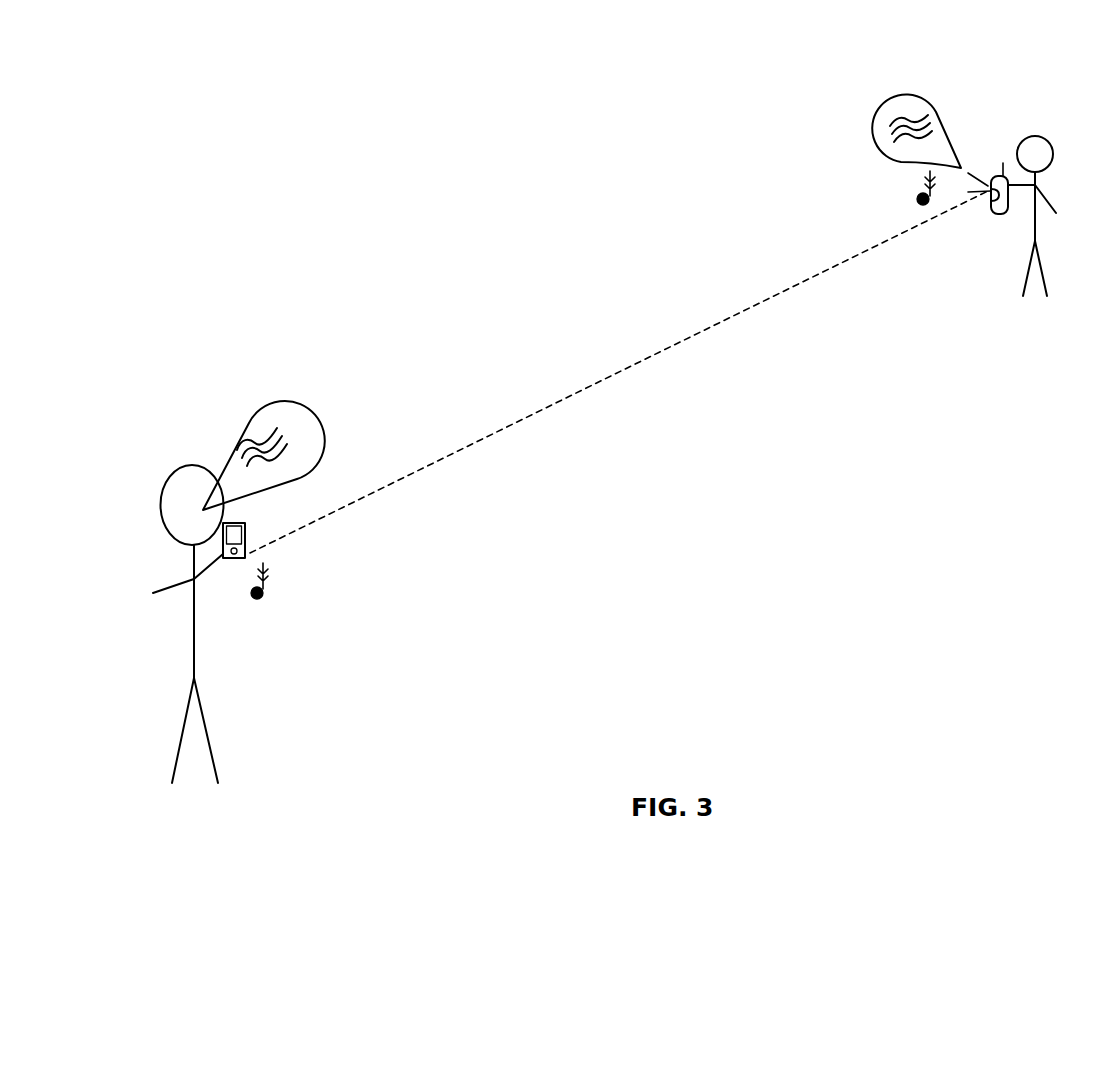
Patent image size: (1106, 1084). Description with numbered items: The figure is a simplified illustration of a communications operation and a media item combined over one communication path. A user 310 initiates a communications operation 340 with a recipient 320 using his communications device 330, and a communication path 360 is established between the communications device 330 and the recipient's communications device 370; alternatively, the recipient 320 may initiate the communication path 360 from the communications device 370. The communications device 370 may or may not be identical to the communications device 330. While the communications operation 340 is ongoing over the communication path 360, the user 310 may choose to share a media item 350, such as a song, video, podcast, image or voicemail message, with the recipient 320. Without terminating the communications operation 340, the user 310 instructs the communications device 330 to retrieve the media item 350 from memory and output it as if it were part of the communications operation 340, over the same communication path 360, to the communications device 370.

The user 310 is at (186, 466).
The recipient 320 is at (1036, 135).
The communications device 330 is at (236, 559).
The communications operation 340 is at (278, 397).
The media item 350 is at (263, 596).
The communication path 360 is at (644, 357).
The communications device 370 is at (1000, 216).